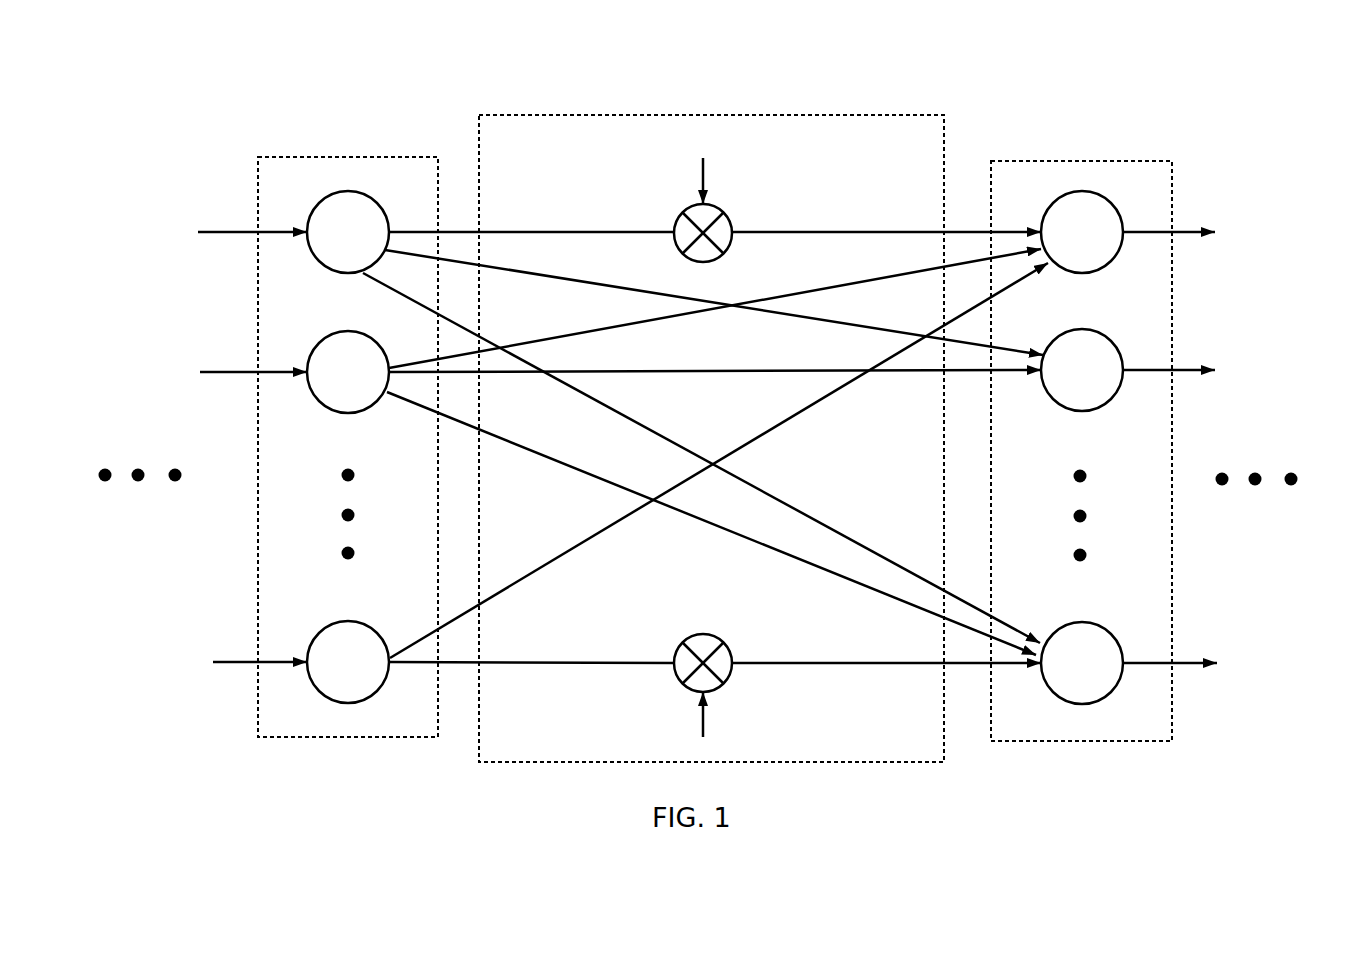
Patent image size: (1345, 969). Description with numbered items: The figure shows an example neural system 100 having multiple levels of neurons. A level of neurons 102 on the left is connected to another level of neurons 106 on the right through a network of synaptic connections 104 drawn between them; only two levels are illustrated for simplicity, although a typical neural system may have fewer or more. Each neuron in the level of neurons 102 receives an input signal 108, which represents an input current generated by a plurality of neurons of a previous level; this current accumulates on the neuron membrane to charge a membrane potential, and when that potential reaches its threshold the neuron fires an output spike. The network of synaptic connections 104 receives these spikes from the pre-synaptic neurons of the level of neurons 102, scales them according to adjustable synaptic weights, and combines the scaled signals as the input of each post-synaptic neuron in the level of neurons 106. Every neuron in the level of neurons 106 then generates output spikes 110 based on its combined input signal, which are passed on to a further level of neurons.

The neural system 100 is at (175, 79).
The level of neurons 102 is at (307, 157).
The network of synaptic connections 104 is at (880, 115).
The level of neurons 106 is at (1067, 161).
The input signal 108 is at (206, 421).
The output spikes 110 is at (1220, 427).